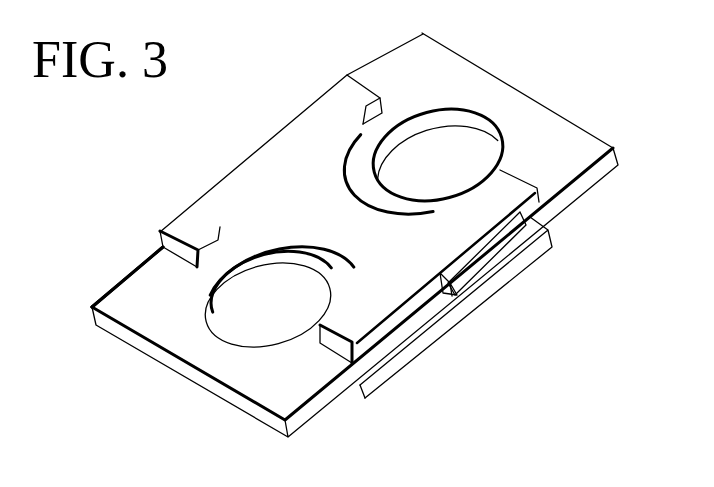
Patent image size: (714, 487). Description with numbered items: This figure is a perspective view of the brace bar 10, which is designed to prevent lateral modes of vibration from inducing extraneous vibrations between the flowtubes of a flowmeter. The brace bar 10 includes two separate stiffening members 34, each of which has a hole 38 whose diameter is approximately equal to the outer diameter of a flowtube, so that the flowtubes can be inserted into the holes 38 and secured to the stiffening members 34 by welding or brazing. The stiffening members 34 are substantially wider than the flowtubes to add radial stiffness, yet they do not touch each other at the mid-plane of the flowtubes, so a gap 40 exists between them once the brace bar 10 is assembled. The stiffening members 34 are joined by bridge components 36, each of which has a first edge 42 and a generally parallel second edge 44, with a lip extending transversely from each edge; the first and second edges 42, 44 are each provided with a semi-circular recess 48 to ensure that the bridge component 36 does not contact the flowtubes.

The brace bar 10 is at (583, 300).
The stiffening member 34 is at (577, 133).
The bridge component 36 is at (314, 118).
The hole 38 is at (458, 108).
The gap 40 is at (457, 290).
The first edge 42 is at (163, 247).
The second edge 44 is at (530, 180).
The semi-circular recess 48 is at (381, 97).